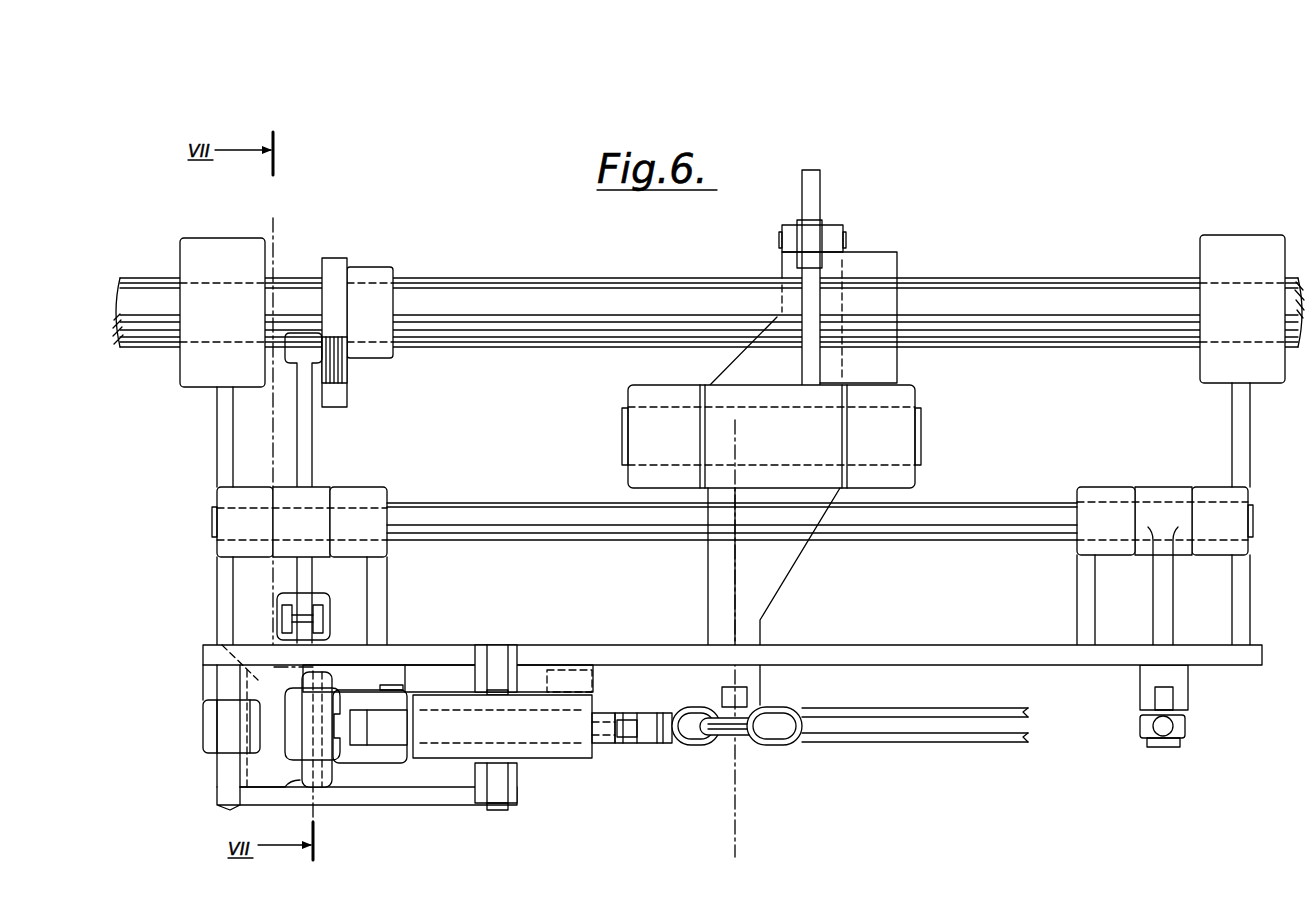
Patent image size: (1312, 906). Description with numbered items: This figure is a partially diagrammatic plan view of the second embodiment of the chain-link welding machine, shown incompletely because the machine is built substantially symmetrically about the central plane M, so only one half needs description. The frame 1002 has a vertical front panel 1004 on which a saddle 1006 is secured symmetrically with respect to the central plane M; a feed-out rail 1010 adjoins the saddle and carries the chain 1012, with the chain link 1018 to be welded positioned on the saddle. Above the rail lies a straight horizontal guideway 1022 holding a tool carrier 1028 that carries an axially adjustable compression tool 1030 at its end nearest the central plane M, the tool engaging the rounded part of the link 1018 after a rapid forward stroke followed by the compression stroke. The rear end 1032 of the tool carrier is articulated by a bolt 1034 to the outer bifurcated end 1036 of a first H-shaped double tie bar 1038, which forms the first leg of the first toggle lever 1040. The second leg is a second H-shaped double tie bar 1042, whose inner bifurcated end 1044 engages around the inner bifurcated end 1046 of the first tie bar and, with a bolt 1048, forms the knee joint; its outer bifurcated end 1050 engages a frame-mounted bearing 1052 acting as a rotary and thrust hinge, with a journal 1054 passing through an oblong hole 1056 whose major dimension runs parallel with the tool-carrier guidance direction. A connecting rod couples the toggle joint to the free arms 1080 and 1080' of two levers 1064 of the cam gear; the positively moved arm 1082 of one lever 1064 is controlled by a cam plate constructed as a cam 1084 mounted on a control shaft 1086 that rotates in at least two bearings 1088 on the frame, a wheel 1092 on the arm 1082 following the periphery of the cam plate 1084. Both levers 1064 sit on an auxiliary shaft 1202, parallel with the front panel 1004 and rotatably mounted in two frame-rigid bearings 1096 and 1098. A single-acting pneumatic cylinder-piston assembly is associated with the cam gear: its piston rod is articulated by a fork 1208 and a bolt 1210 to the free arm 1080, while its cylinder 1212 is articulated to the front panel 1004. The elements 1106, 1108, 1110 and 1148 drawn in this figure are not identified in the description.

The frame 1002 is at (1210, 668).
The front panel 1004 is at (836, 652).
The saddle 1006 is at (731, 740).
The rail 1010 is at (852, 738).
The chain 1012 is at (683, 704).
The chain link 1018 is at (745, 745).
The guideway 1022 is at (552, 753).
The tool carrier 1028 is at (600, 715).
The compression tool 1030 is at (678, 730).
The rear end of tool carrier 1032 is at (373, 724).
The bolt 1034 is at (407, 682).
The outer bifurcated end 1036 is at (405, 712).
The first H-shaped double tie bar 1038 is at (363, 765).
The first toggle lever 1040 is at (340, 681).
The second H-shaped double tie bar 1042 is at (271, 789).
The inner bifurcated end 1044 is at (332, 772).
The inner bifurcated end 1046 is at (306, 757).
The bolt 1048 is at (224, 650).
The outer bifurcated end 1050 is at (218, 774).
The bearing 1052 is at (210, 718).
The journal 1054 is at (217, 795).
The oblong hole 1056 is at (220, 730).
The lever 1064 is at (281, 486).
The free arm 1080 is at (336, 572).
The free arm 1080' is at (1139, 596).
The positively moved arm 1082 is at (303, 426).
The cam plate 1084 is at (333, 262).
The control shaft 1086 is at (542, 293).
The bearings 1088 is at (228, 240).
The wheel 1092 is at (347, 375).
The bearing 1096 is at (217, 493).
The bearing 1098 is at (360, 495).
The bolt 1106 is at (512, 682).
The clamp 1108 is at (497, 648).
The plate 1110 is at (458, 800).
The plate 1148 is at (862, 233).
The auxiliary shaft 1202 is at (940, 514).
The fork 1208 is at (280, 612).
The bolt 1210 is at (282, 620).
The cylinder 1212 is at (293, 594).
The central plane M is at (735, 600).